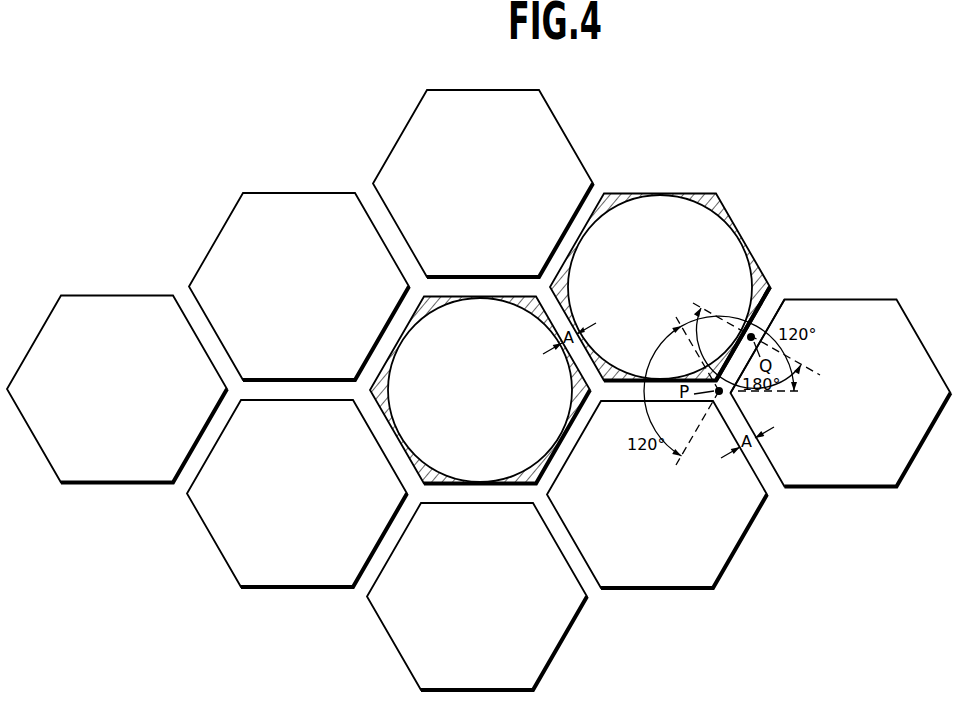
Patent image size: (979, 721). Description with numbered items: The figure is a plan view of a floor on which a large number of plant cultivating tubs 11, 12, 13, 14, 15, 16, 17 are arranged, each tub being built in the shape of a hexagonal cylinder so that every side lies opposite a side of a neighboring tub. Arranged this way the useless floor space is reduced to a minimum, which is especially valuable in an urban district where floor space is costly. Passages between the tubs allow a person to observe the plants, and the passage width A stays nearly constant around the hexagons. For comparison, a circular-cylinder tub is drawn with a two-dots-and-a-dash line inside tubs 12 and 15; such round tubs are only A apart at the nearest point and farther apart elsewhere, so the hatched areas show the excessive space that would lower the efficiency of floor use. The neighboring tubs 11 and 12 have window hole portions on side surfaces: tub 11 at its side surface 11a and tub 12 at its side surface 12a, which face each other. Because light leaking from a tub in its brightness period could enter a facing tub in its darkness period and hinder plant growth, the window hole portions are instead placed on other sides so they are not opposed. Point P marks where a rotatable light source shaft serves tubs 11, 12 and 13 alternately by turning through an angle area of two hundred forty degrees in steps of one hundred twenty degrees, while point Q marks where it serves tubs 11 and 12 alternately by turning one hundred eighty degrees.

The plant cultivating tub 11 is at (925, 443).
The side surface of plant cultivating tub 11a is at (781, 306).
The plant cultivating tub 12 is at (697, 196).
The side surface of plant cultivating tub 12a is at (763, 300).
The plant cultivating tub 13 is at (741, 542).
The plant cultivating tub 14 is at (566, 149).
The plant cultivating tub 15 is at (480, 390).
The plant cultivating tub 16 is at (566, 636).
The plant cultivating tub 17 is at (324, 201).